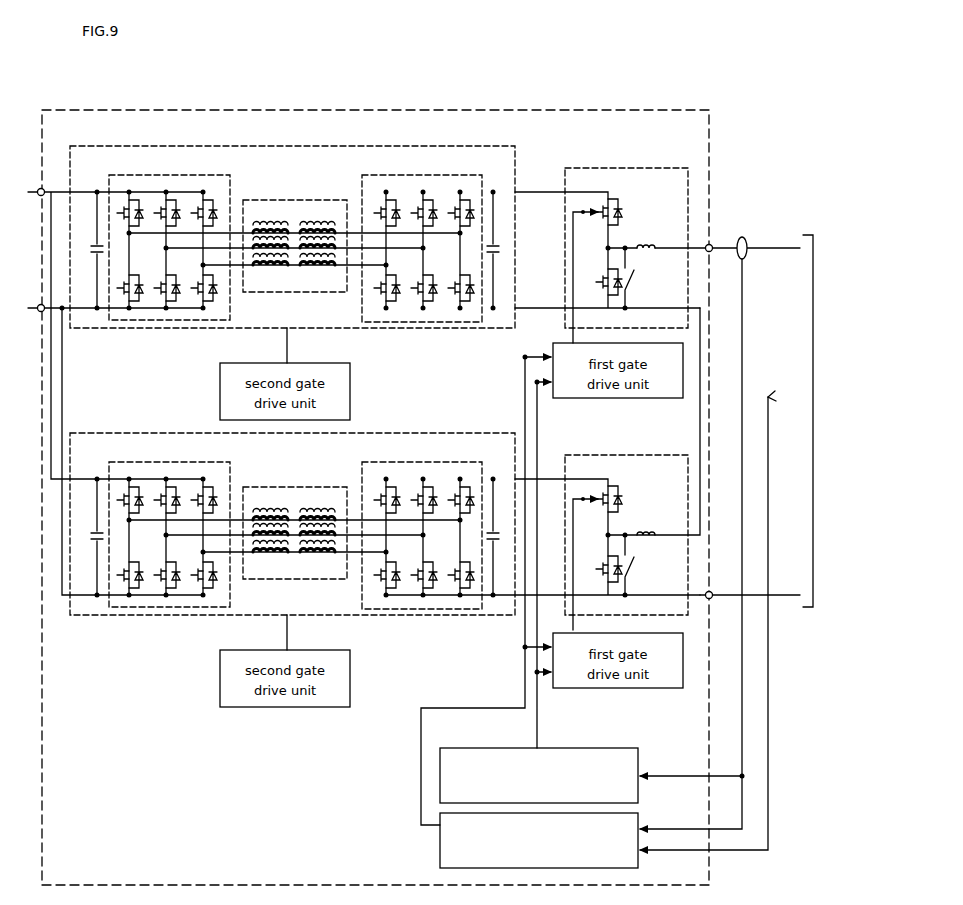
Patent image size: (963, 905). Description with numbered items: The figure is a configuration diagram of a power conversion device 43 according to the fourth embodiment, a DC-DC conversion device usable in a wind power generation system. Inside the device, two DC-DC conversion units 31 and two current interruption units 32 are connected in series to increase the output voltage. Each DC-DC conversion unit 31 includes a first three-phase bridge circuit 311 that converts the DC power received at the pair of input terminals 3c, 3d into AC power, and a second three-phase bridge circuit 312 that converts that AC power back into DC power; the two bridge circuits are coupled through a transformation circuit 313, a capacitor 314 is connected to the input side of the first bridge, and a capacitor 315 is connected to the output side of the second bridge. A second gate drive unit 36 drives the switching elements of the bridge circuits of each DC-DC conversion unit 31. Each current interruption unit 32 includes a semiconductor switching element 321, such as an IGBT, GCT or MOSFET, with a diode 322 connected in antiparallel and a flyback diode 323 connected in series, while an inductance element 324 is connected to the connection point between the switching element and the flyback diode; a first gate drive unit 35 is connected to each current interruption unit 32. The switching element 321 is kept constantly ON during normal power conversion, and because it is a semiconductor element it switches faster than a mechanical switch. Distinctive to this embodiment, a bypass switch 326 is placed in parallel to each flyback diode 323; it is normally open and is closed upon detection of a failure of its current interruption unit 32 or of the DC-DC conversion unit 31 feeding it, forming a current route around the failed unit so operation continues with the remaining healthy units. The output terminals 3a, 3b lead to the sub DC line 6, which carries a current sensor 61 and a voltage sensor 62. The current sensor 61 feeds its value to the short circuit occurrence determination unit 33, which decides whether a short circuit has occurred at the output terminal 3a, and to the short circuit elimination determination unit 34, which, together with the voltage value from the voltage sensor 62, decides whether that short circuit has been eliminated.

The power conversion device 43 is at (498, 110).
The DC-DC conversion unit 31 is at (417, 146).
The capacitor 314 is at (95, 245).
The transformation circuit 313 is at (295, 192).
The second three-phase bridge circuit 312 is at (362, 188).
The capacitor 315 is at (497, 244).
The first three-phase bridge circuit 311 is at (233, 298).
The current interruption unit 32 is at (627, 168).
The diode 322 is at (617, 209).
The flyback diode 323 is at (604, 287).
The semiconductor switching element 321 is at (597, 233).
The inductance element 324 is at (647, 242).
The bypass switch 326 is at (630, 270).
The output terminal 3a is at (711, 254).
The output terminal 3b is at (711, 598).
The input terminal 3c is at (29, 196).
The input terminal 3d is at (40, 311).
The current sensor 61 is at (742, 237).
The voltage sensor 62 is at (767, 395).
The sub DC line 6 is at (813, 422).
The first gate drive unit 35 is at (658, 401).
The second gate drive unit 36 is at (220, 382).
The short circuit occurrence determination unit 33 is at (642, 752).
The short circuit elimination determination unit 34 is at (436, 853).